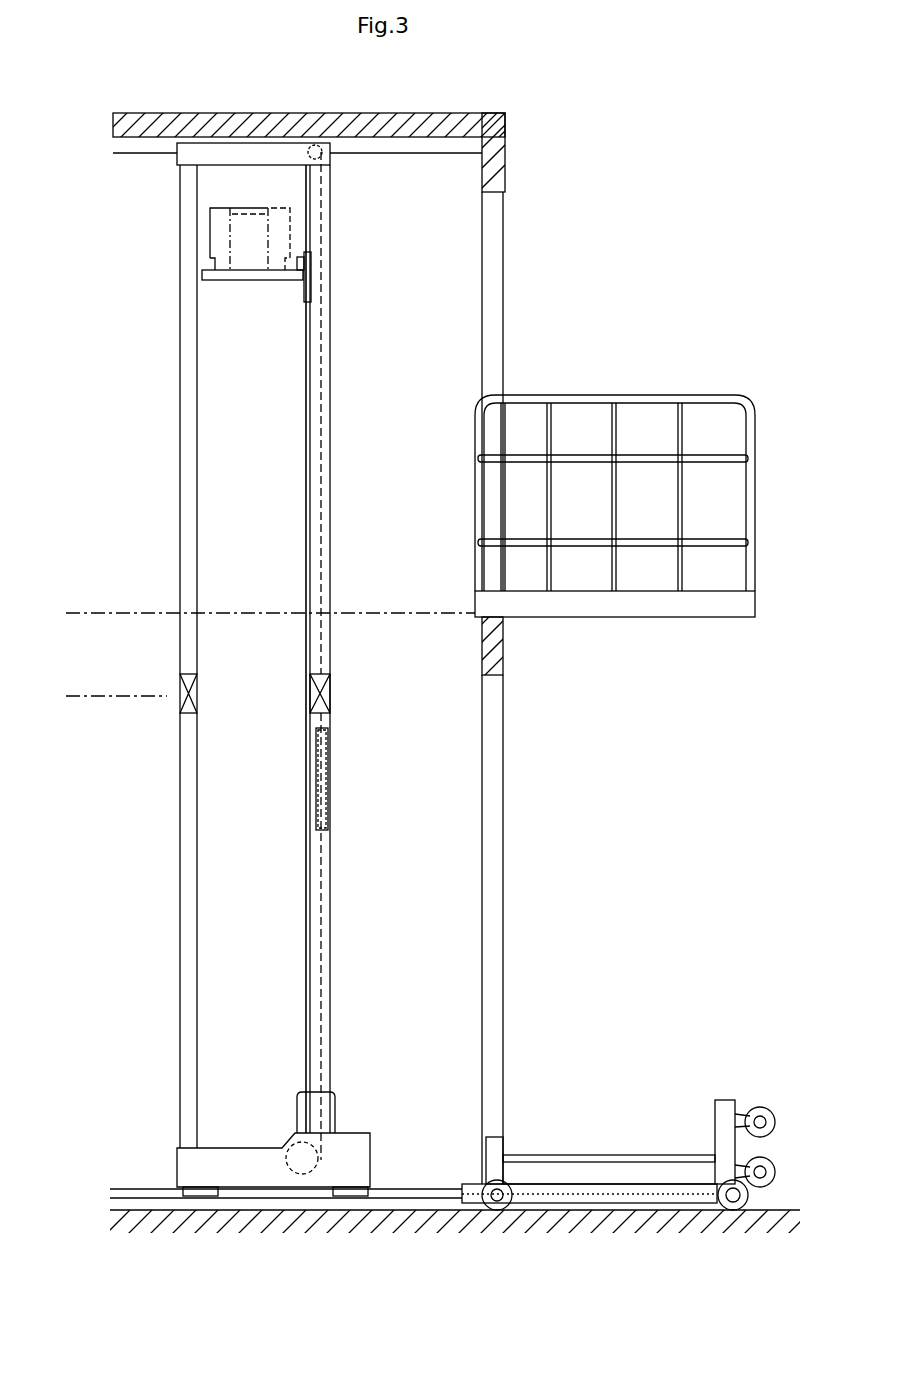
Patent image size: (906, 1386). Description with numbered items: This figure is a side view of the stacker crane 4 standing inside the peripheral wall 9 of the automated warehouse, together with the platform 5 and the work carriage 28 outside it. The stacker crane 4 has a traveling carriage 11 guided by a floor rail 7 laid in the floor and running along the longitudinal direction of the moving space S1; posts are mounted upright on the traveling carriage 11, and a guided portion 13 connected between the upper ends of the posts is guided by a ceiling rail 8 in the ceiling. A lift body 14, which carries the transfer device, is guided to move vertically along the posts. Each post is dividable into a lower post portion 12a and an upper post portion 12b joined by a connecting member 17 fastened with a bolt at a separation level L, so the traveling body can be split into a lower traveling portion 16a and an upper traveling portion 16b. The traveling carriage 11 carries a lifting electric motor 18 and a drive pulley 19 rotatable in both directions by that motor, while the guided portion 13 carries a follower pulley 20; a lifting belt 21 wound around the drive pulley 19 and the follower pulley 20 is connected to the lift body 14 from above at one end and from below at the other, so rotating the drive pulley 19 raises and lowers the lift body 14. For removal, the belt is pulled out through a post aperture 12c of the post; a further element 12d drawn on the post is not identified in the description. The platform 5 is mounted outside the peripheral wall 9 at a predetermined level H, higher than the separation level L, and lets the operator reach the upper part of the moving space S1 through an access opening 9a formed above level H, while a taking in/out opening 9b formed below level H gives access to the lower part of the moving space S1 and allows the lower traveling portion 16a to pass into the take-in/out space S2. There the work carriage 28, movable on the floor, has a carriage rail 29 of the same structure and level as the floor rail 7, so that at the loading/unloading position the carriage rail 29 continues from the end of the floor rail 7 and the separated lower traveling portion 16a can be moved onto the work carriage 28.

The peripheral wall 9 is at (250, 110).
The access opening 9a is at (492, 225).
The taking in/out opening 9b is at (493, 888).
The ceiling rail 8 is at (400, 155).
The guided portion 13 is at (213, 166).
The follower pulley 20 is at (316, 144).
The stacker crane 4 is at (164, 229).
The upper post portion 12b is at (188, 343).
The lower post portion 12a is at (190, 849).
The lifting belt 21 is at (306, 470).
The upper traveling portion 16b is at (345, 318).
The lower traveling portion 16a is at (344, 908).
The lift body 14 is at (258, 282).
The connecting member 17 is at (316, 695).
The slider 12d is at (316, 775).
The post aperture 12c is at (328, 788).
The platform 5 is at (605, 395).
The traveling carriage 11 is at (372, 1146).
The lifting electric motor 18 is at (297, 1117).
The drive pulley 19 is at (318, 1163).
The floor rail 7 is at (148, 1189).
The work carriage 28 is at (641, 1124).
The carriage rail 29 is at (568, 1183).
The predetermined level H is at (259, 615).
The separation level L is at (106, 697).
The moving space S1 is at (393, 751).
The take-in/out space S2 is at (609, 751).